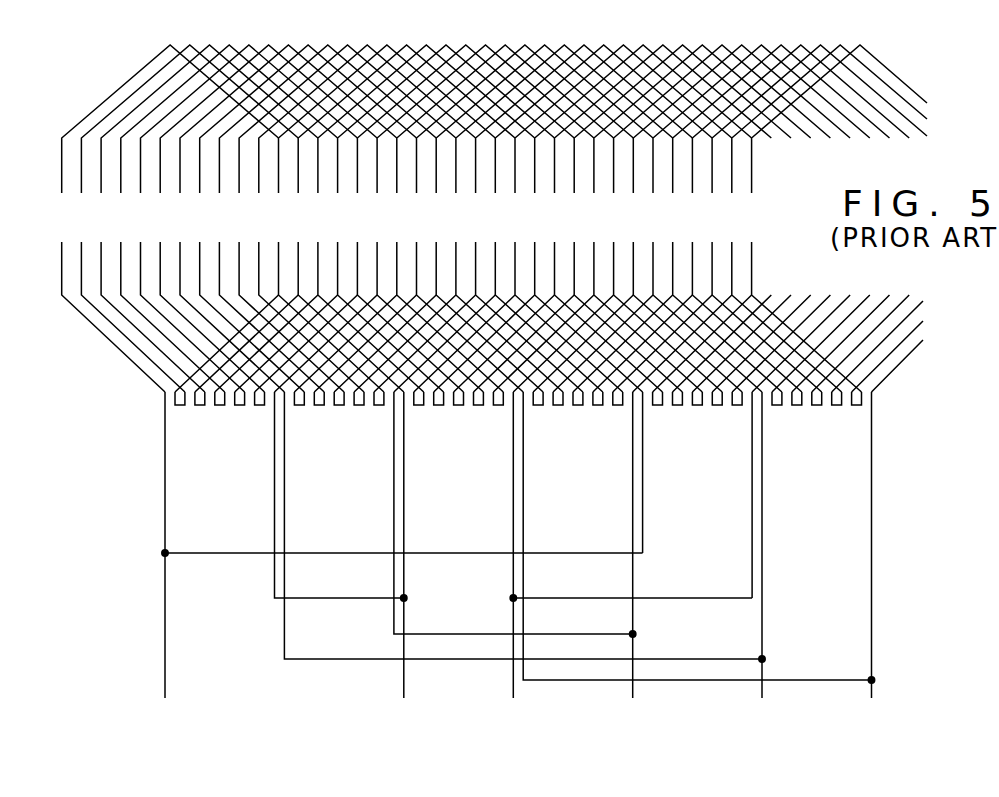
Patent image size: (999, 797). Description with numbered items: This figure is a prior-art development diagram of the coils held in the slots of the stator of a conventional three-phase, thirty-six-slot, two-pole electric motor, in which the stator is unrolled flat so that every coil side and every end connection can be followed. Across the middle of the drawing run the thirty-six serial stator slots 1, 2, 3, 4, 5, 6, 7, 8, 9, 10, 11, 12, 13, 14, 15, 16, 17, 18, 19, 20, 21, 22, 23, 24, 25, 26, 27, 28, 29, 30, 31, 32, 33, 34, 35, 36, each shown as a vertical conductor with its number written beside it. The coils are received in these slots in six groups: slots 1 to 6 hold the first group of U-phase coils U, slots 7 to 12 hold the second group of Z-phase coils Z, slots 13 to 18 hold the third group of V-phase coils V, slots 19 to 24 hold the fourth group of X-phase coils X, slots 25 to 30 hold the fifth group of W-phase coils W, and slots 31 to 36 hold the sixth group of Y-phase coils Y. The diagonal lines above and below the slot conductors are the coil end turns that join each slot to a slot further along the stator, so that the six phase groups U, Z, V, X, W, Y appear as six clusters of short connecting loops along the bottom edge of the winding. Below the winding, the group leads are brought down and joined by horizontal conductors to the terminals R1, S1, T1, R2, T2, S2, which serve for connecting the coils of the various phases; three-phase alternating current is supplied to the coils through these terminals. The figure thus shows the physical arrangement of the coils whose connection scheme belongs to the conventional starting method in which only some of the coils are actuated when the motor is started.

The slot 1 is at (166, 218).
The slot 2 is at (186, 218).
The slot 3 is at (206, 218).
The slot 4 is at (225, 218).
The slot 5 is at (245, 218).
The slot 6 is at (265, 218).
The slot 7 is at (284, 218).
The slot 8 is at (304, 218).
The slot 9 is at (324, 218).
The slot 10 is at (341, 218).
The slot 11 is at (361, 218).
The slot 12 is at (381, 218).
The slot 13 is at (400, 218).
The slot 14 is at (420, 218).
The slot 15 is at (440, 218).
The slot 16 is at (459, 218).
The slot 17 is at (479, 218).
The slot 18 is at (499, 218).
The slot 19 is at (518, 218).
The slot 20 is at (538, 218).
The slot 21 is at (558, 218).
The slot 22 is at (578, 218).
The slot 23 is at (597, 218).
The slot 24 is at (617, 218).
The slot 25 is at (637, 218).
The slot 26 is at (656, 218).
The slot 27 is at (676, 218).
The slot 28 is at (696, 218).
The slot 29 is at (716, 218).
The slot 30 is at (735, 218).
The slot 31 is at (755, 218).
The slot 32 is at (775, 218).
The slot 33 is at (794, 218).
The slot 34 is at (813, 218).
The slot 35 is at (823, 218).
The slot 36 is at (833, 218).
The U-phase coils U is at (223, 409).
The Z-phase coils Z is at (348, 409).
The V-phase coils V is at (466, 409).
The X-phase coils X is at (573, 409).
The W-phase coils W is at (698, 409).
The Y-phase coils Y is at (816, 409).
The terminal R1 is at (396, 560).
The terminal S1 is at (346, 560).
The terminal T1 is at (624, 560).
The terminal R2 is at (520, 560).
The terminal T2 is at (529, 560).
The terminal S2 is at (704, 560).